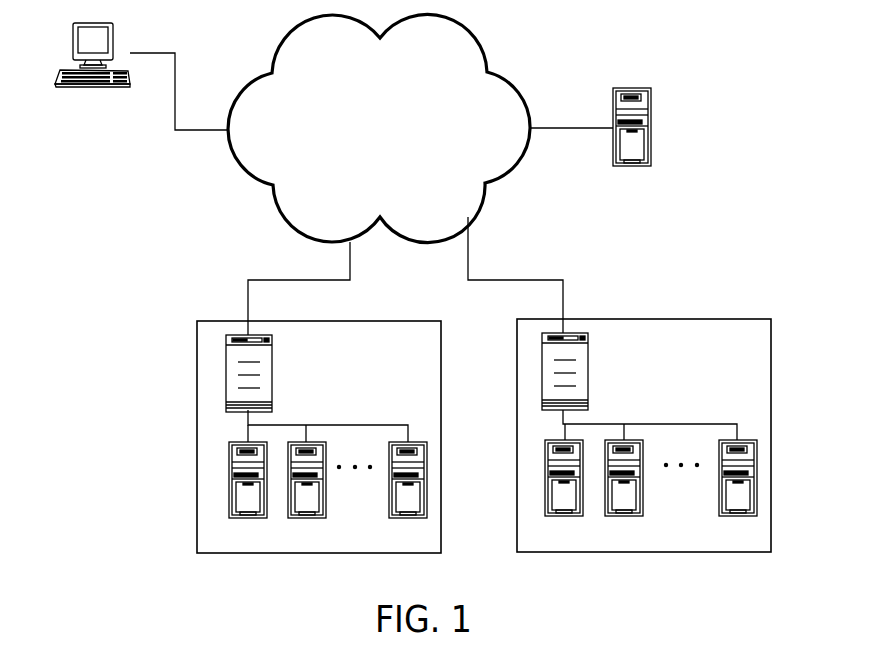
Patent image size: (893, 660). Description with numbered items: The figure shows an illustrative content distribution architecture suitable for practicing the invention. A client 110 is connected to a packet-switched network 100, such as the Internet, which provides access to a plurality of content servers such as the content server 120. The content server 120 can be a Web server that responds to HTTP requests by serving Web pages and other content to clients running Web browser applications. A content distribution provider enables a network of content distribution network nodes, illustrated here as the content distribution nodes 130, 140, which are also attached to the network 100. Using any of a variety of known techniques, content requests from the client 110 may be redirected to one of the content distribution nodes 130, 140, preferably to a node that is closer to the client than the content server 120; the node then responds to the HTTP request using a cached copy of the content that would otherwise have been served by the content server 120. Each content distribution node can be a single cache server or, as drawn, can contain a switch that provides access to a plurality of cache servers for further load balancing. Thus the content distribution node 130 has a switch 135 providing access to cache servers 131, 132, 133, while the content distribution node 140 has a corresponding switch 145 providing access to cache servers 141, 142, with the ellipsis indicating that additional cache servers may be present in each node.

The packet-switched network 100 is at (379, 128).
The client 110 is at (92, 70).
The content server 120 is at (652, 127).
The content distribution node 130 is at (319, 423).
The switch 135 is at (268, 373).
The cache server 131 is at (247, 497).
The cache server 132 is at (307, 497).
The cache server 133 is at (407, 497).
The content distribution node 140 is at (644, 421).
The switch 145 is at (586, 371).
The cache server 141 is at (564, 495).
The cache server 142 is at (681, 495).